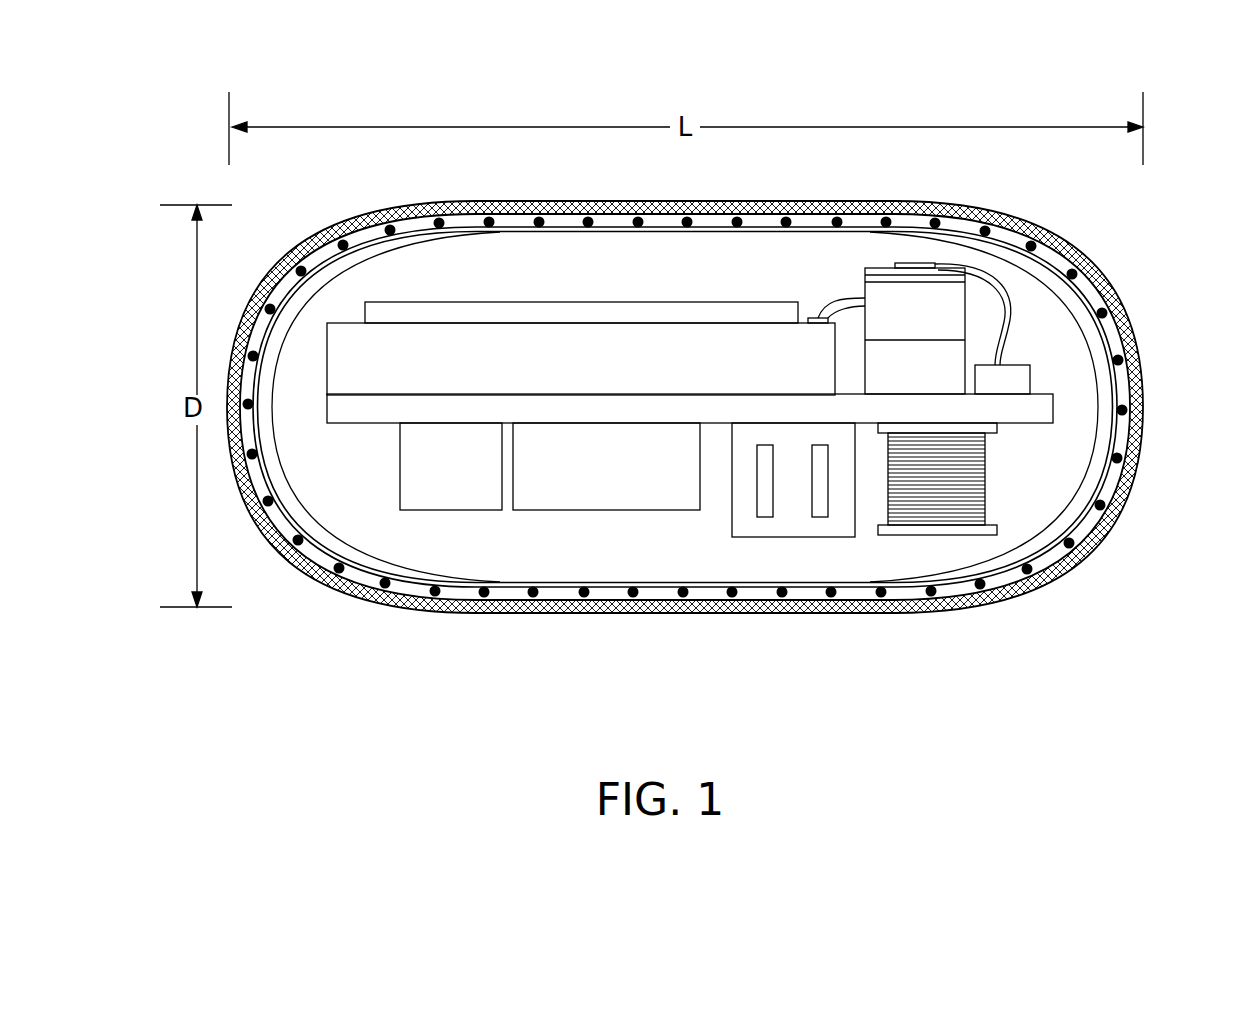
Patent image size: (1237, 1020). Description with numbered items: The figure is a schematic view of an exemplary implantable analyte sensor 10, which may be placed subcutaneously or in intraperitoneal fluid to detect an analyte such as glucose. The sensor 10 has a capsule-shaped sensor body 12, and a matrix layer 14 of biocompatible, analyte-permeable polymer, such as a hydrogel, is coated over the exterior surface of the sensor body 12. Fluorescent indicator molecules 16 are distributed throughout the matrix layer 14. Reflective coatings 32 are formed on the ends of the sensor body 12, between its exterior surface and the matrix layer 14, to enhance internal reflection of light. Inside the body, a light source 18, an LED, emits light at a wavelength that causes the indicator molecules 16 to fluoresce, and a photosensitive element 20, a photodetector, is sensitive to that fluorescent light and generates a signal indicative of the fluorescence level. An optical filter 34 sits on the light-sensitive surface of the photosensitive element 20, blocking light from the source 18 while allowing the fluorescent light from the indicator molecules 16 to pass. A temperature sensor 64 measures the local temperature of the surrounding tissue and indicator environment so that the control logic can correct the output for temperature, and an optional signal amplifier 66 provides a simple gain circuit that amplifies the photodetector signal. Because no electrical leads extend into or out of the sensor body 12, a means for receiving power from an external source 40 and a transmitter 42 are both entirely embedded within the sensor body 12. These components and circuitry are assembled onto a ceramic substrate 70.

The analyte sensor 10 is at (595, 188).
The sensor body 12 is at (460, 558).
The matrix layer 14 is at (1062, 268).
The fluorescent indicator molecules 16 is at (1108, 302).
The light source 18 is at (865, 292).
The photosensitive element 20 is at (355, 375).
The reflective coatings 32 is at (284, 530).
The optical filter 34 is at (432, 300).
The means for receiving power from an external source 40 is at (985, 478).
The transmitter 42 is at (731, 525).
The temperature sensor 64 is at (413, 512).
The signal amplifier 66 is at (545, 512).
The ceramic substrate 70 is at (1030, 407).